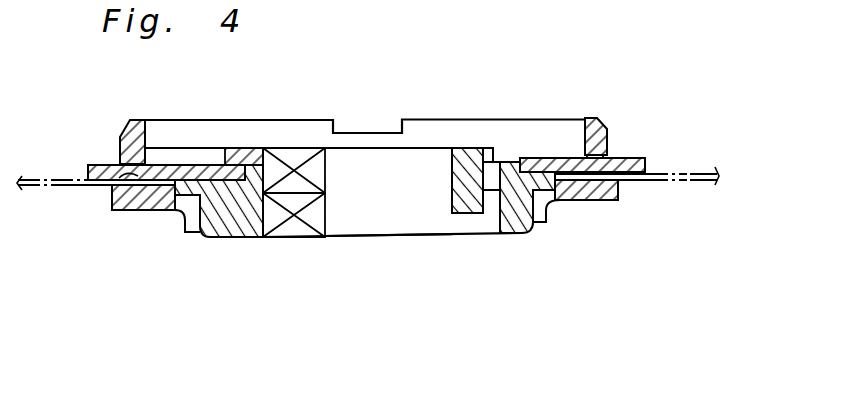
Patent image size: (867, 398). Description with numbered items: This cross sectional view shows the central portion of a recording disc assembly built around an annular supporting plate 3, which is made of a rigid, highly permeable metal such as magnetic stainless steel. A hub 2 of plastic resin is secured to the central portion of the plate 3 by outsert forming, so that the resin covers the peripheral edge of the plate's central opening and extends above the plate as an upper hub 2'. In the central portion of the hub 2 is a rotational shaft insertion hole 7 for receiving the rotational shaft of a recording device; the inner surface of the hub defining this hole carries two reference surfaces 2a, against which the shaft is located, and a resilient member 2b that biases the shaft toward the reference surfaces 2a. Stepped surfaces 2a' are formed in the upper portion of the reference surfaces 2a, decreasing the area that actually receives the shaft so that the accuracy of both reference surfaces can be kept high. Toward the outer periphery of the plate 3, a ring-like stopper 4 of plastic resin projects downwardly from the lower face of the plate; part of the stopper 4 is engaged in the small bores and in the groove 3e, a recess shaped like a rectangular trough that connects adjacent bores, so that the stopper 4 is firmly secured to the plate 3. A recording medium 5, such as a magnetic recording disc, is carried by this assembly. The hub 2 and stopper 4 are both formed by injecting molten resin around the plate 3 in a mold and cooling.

The hub 2 is at (333, 242).
The upper hub 2' is at (575, 249).
The reference surfaces 2a is at (368, 126).
The stepped surfaces 2a' is at (294, 257).
The resilient member 2b is at (467, 210).
The annular supporting plate 3 is at (637, 157).
The groove 3e is at (118, 180).
The stopper 4 is at (123, 138).
The recording medium 5 is at (697, 183).
The rotational shaft insertion hole 7 is at (391, 218).